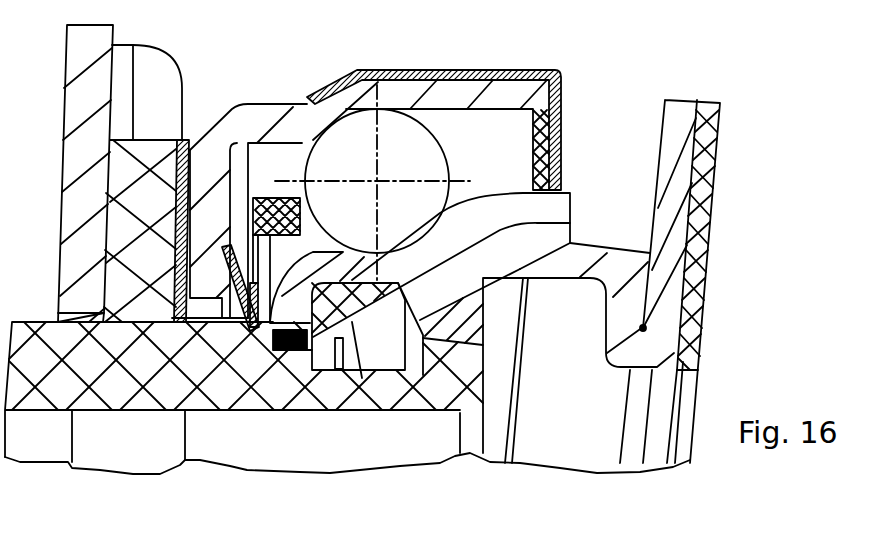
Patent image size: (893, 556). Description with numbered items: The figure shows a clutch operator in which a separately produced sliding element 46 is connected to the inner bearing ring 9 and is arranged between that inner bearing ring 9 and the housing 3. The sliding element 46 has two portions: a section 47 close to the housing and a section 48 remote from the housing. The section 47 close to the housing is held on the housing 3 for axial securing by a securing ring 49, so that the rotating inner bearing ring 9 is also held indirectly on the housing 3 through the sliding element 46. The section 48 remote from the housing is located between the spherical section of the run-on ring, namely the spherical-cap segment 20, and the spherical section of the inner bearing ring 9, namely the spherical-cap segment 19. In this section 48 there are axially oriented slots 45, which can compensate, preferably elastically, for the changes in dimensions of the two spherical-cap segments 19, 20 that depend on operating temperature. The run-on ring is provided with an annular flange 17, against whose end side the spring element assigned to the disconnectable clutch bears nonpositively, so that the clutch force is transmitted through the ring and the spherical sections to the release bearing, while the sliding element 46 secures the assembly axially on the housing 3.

The housing 3 is at (238, 385).
The inner bearing ring 9 is at (563, 210).
The annular flange 17 is at (677, 217).
The spherical-cap segment 19 is at (470, 213).
The spherical-cap segment 20 is at (477, 280).
The axially oriented slots 45 is at (503, 240).
The sliding element 46 is at (352, 322).
The section close to the housing 47 is at (377, 326).
The section remote from the housing 48 is at (578, 246).
The securing ring 49 is at (330, 353).